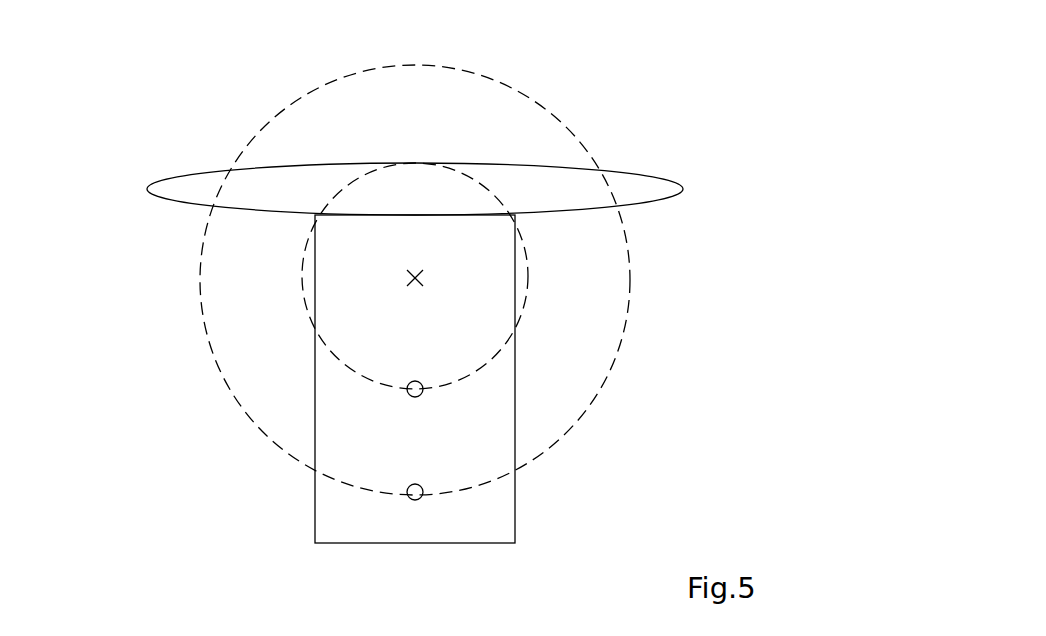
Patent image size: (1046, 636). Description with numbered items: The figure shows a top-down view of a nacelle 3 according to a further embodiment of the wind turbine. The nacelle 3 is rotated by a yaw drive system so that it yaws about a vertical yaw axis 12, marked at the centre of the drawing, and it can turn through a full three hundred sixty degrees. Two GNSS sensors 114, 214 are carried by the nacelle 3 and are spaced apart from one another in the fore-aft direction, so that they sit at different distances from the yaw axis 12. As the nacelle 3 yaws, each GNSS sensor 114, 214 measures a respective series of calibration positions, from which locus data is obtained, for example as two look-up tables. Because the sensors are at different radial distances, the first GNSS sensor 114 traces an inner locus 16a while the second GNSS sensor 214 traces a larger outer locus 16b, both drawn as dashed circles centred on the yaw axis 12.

The nacelle 3 is at (515, 403).
The yaw axis 12 is at (410, 276).
The locus 16a is at (530, 273).
The locus 16b is at (547, 108).
The GNSS sensor 114 is at (407, 388).
The GNSS sensor 214 is at (407, 491).